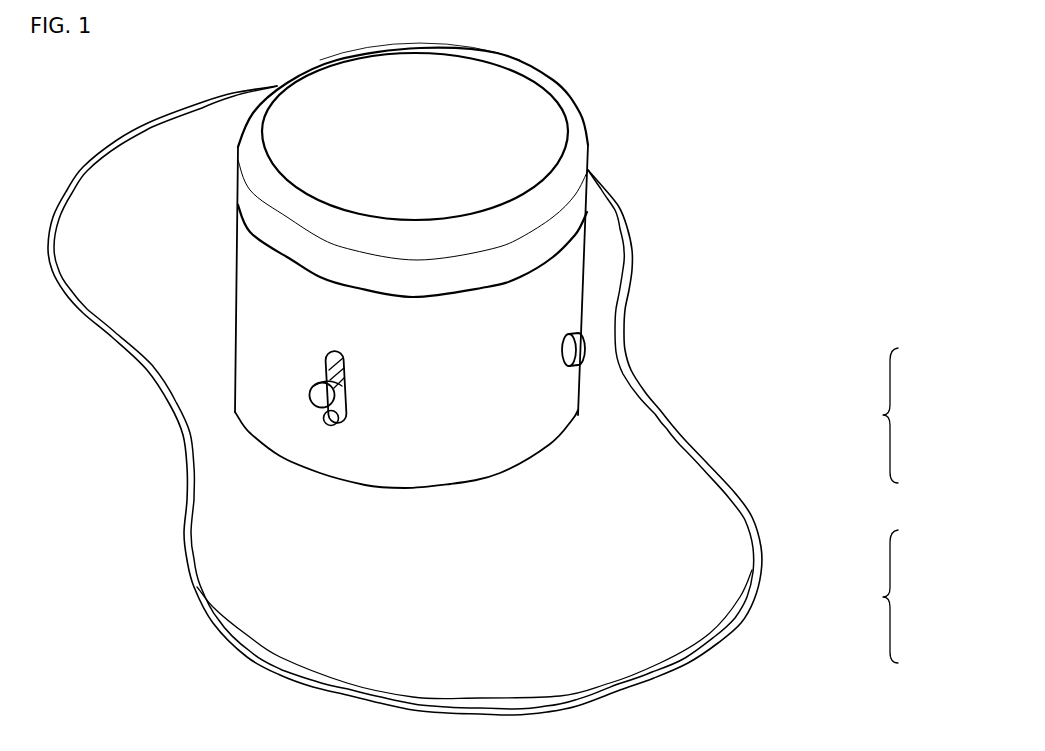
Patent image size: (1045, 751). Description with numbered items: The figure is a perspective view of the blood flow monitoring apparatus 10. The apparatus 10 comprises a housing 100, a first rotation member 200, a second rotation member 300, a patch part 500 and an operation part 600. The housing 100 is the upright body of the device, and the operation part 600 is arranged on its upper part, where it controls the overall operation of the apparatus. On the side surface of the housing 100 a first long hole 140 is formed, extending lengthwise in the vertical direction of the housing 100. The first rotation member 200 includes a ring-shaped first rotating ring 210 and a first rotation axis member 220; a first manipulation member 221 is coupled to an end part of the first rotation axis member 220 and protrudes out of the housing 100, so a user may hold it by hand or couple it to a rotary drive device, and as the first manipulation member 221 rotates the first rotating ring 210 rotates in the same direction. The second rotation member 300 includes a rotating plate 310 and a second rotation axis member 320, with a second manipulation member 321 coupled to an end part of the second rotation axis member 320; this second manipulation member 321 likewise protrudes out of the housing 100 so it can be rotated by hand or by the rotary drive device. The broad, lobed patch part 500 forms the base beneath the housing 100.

The blood flow monitoring apparatus 10 is at (672, 287).
The housing 100 is at (530, 426).
The first long hole 140 is at (325, 362).
The first rotation member 200 is at (854, 418).
The first rotating ring 210 is at (923, 352).
The first rotation axis member 220 is at (585, 348).
The first manipulation member 221 is at (923, 480).
The second rotation member 300 is at (854, 600).
The rotating plate 310 is at (923, 533).
The second rotation axis member 320 is at (923, 598).
The second manipulation member 321 is at (313, 398).
The patch part 500 is at (632, 542).
The operation part 600 is at (573, 213).